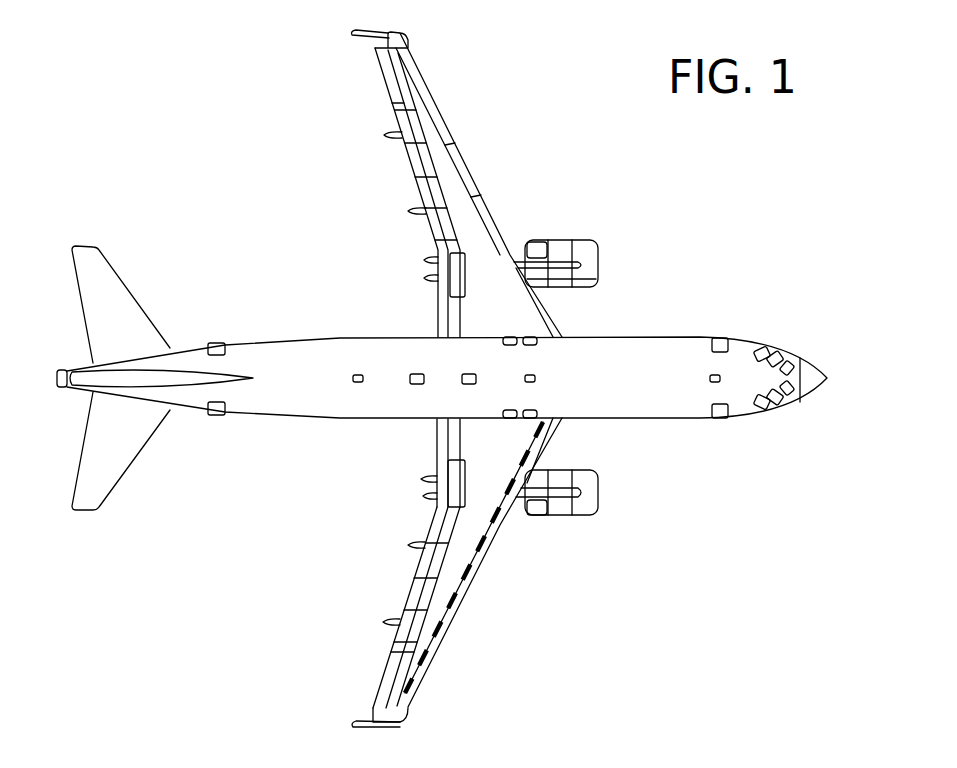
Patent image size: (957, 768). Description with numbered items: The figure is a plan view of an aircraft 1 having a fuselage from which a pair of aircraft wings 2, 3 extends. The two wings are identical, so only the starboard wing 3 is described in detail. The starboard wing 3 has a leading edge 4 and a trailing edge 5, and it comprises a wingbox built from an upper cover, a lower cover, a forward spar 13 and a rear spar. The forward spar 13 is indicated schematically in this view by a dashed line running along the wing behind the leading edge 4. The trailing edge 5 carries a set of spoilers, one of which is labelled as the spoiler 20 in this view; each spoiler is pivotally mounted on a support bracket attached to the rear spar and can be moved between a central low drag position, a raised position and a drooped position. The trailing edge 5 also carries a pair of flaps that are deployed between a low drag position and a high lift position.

The aircraft 1 is at (245, 215).
The aircraft wing 2 is at (467, 223).
The starboard wing 3 is at (490, 442).
The leading edge 4 is at (488, 588).
The trailing edge 5 is at (400, 578).
The forward spar 13 is at (483, 542).
The spoiler 20 is at (408, 627).